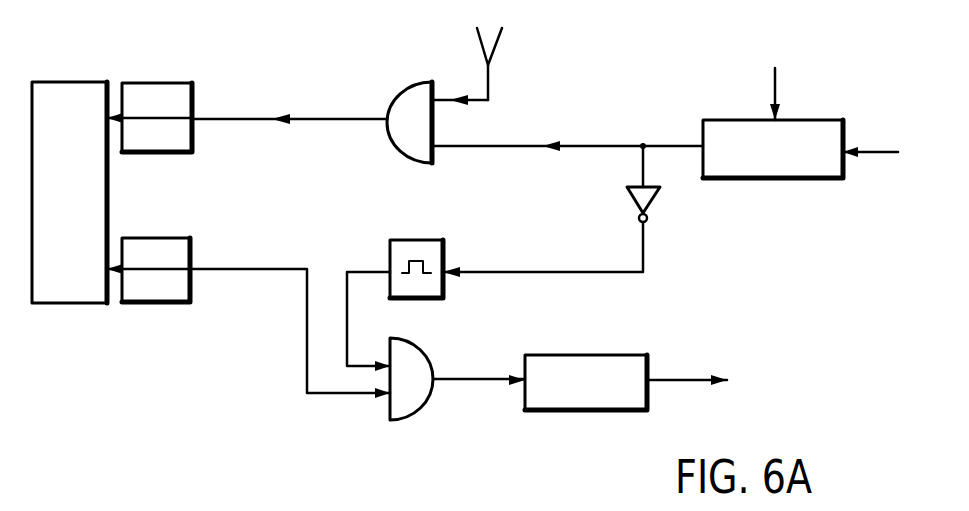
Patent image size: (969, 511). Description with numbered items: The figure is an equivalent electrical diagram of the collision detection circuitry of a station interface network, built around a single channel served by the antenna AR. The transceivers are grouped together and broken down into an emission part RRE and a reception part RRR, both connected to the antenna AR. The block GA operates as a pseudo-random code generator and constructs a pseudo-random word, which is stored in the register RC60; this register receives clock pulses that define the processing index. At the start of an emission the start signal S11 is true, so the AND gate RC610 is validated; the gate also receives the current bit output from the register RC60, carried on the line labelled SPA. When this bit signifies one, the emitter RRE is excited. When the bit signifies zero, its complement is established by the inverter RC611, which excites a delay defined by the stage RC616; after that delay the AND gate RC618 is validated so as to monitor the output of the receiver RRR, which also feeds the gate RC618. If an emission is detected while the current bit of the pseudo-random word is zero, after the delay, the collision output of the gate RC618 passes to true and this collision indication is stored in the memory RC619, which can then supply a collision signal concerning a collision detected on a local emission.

The antenna AR is at (70, 82).
The emission part RRE is at (172, 83).
The reception part RRR is at (167, 238).
The AND gate RC610 is at (393, 97).
The signal S11 is at (500, 43).
The signal SPA is at (567, 159).
The register RC60 is at (805, 120).
The pseudo-random code generator block GA is at (870, 167).
The inverter RC611 is at (655, 200).
The delay stage RC616 is at (427, 240).
The AND gate RC618 is at (415, 345).
The memory RC619 is at (632, 355).